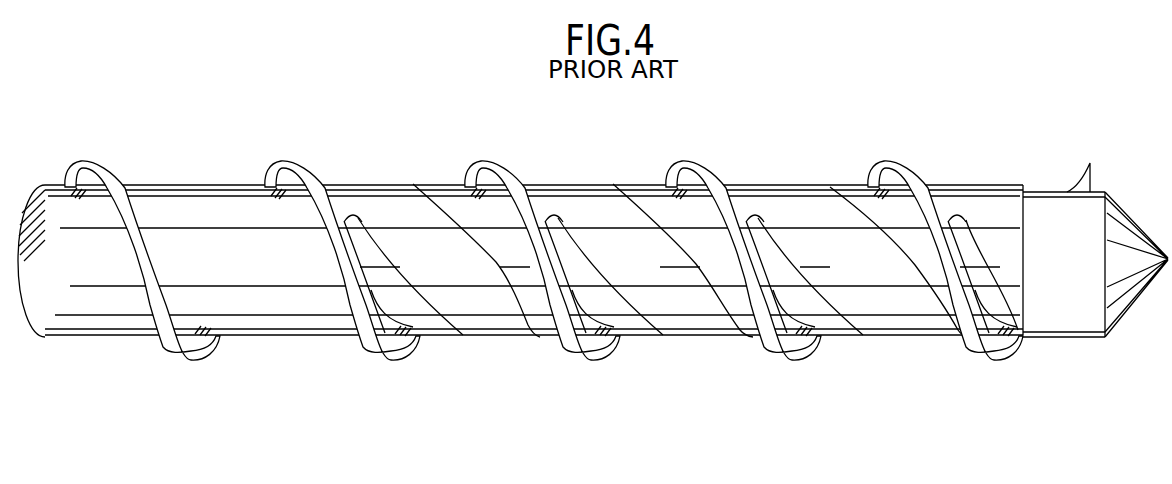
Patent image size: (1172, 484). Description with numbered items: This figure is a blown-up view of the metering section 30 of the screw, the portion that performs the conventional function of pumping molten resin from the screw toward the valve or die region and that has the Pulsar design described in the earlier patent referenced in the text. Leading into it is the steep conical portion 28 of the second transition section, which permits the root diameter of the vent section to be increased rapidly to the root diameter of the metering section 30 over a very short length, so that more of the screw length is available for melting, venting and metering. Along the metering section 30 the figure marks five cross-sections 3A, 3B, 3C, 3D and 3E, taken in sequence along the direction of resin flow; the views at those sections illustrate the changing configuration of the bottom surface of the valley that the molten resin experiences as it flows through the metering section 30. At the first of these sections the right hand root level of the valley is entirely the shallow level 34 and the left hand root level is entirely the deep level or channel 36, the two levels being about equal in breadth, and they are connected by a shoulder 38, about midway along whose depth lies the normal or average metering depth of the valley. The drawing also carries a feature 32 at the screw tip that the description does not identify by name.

The conical portion 28 is at (263, 342).
The metering section 30 is at (711, 352).
The conical tip 32 is at (1134, 218).
The shallow level 34 is at (568, 184).
The deep level or channel 36 is at (632, 192).
The shoulder 38 is at (650, 208).
The cross-section 3A— 3A is at (510, 222).
The cross-section 3B— 3B is at (525, 257).
The cross-section 3C— 3C is at (540, 303).
The cross-section 3D— 3D is at (556, 340).
The cross-section 3E— 3E is at (567, 370).